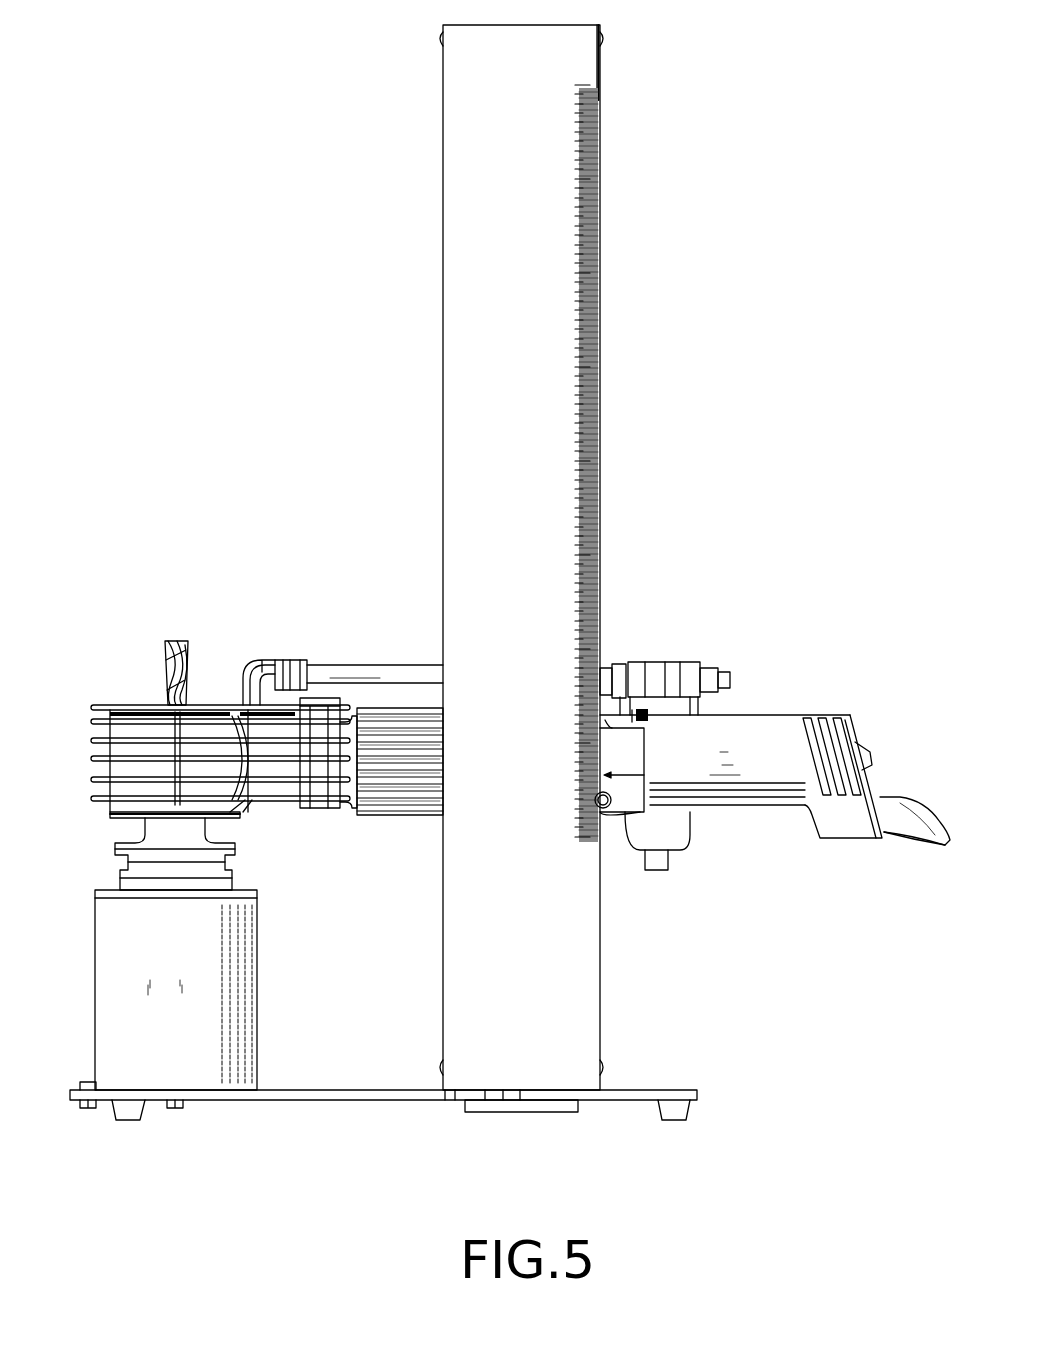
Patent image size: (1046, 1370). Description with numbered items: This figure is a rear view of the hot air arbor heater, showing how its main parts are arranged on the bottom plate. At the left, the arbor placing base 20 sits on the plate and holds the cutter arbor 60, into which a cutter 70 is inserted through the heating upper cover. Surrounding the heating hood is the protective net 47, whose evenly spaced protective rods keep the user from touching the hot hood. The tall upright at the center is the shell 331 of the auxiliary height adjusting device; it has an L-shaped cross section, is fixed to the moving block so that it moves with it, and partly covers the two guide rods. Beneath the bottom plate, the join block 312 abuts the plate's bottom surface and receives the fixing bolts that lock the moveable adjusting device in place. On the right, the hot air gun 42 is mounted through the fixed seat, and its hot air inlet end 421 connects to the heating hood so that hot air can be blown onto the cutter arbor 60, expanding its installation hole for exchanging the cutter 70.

The arbor placing base 20 is at (248, 1005).
The hot air gun 42 is at (765, 716).
The protective net 47 is at (101, 707).
The cutter arbor 60 is at (232, 865).
The cutter 70 is at (195, 645).
The join block 312 is at (557, 1108).
The shell 331 is at (563, 952).
The hot air inlet end 421 is at (870, 797).